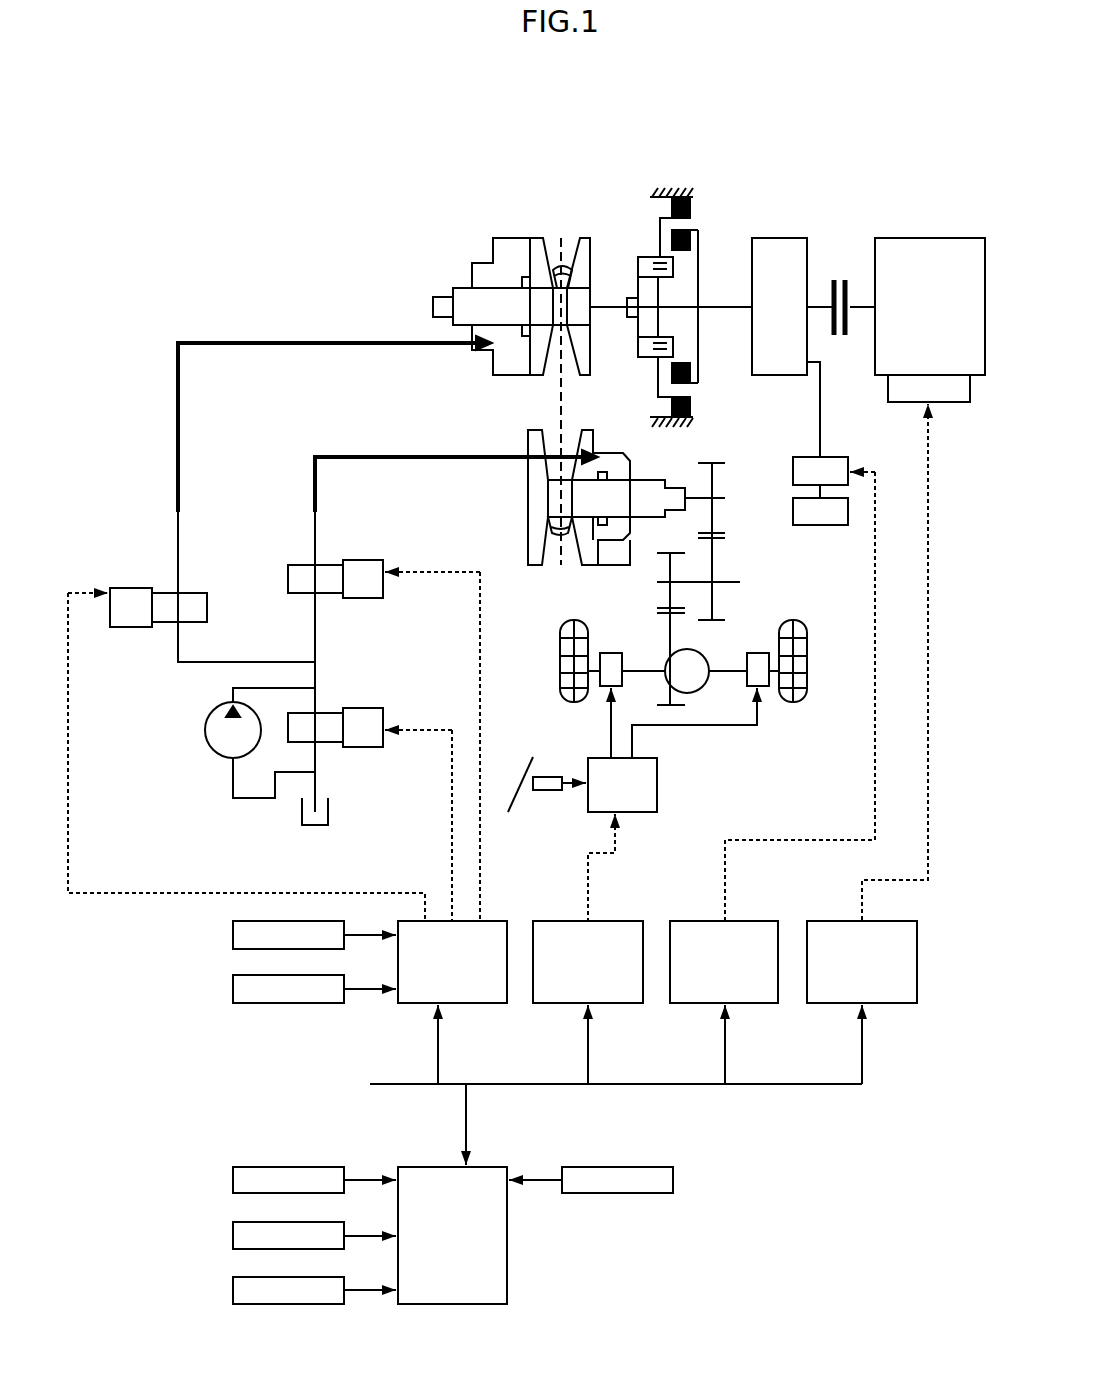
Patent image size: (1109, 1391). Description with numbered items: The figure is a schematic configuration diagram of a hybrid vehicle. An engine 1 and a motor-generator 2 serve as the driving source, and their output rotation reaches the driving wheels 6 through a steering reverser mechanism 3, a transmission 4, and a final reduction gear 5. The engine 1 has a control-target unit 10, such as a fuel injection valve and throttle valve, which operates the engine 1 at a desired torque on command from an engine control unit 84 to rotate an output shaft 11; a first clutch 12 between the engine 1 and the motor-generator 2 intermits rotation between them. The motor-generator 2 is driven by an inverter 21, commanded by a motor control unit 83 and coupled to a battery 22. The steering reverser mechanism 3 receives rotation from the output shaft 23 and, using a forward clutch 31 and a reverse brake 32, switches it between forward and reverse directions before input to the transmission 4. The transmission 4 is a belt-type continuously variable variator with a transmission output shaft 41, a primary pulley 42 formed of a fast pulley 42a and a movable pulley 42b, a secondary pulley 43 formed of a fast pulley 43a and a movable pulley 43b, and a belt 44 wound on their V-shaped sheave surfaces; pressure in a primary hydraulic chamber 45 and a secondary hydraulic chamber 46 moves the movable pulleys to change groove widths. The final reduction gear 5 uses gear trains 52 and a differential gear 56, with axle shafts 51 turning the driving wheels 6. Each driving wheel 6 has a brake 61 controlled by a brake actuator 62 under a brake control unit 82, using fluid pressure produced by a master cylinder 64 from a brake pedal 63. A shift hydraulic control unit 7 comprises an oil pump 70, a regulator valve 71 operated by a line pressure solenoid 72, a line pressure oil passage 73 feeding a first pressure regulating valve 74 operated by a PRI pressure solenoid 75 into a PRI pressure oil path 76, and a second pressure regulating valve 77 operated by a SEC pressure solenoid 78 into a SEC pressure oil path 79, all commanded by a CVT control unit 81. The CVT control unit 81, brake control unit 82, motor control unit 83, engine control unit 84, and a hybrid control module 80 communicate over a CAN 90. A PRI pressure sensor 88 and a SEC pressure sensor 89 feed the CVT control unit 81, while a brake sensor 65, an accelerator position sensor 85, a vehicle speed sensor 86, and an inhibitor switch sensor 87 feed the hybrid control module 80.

The engine 1 is at (940, 238).
The control-target unit 10 is at (955, 403).
The output shaft 11 is at (855, 300).
The first clutch 12 is at (836, 280).
The motor-generator 2 is at (790, 238).
The inverter 21 is at (805, 457).
The battery 22 is at (793, 512).
The output shaft 23 is at (717, 303).
The steering reverser mechanism 3 is at (679, 181).
The forward clutch 31 is at (692, 230).
The reverse brake 32 is at (668, 190).
The transmission 4 is at (564, 183).
The transmission output shaft 41 is at (693, 497).
The primary pulley 42 is at (475, 268).
The fast pulley 42a is at (582, 237).
The movable pulley 42b is at (535, 238).
The secondary pulley 43 is at (528, 543).
The fast pulley 43a is at (528, 443).
The movable pulley 43b is at (585, 430).
The belt 44 is at (553, 535).
The primary hydraulic chamber 45 is at (515, 253).
The secondary hydraulic chamber 46 is at (607, 543).
The final reduction gear 5 is at (745, 550).
The axle shafts 51 is at (632, 673).
The gear trains 52 is at (713, 598).
The differential gear 56 is at (693, 650).
The driving wheels 6 is at (560, 678).
The brake 61 is at (603, 688).
The brake actuator 62 is at (658, 782).
The brake pedal 63 is at (513, 813).
The master cylinder 64 is at (547, 790).
The brake sensor 65 is at (674, 1180).
The shift hydraulic control unit 7 is at (147, 792).
The oil pump 70 is at (210, 743).
The regulator valve 71 is at (323, 708).
The line pressure solenoid 72 is at (372, 747).
The line pressure oil passage 73 is at (207, 663).
The first pressure regulating valve 74 is at (168, 592).
The PRI pressure solenoid 75 is at (120, 628).
The PRI pressure oil path 76 is at (178, 530).
The second pressure regulating valve 77 is at (323, 560).
The SEC pressure solenoid 78 is at (372, 600).
The SEC pressure oil path 79 is at (315, 537).
The hybrid control module 80 is at (507, 1261).
The CVT control unit 81 is at (480, 1003).
The brake control unit 82 is at (616, 1003).
The motor control unit 83 is at (751, 1003).
The engine control unit 84 is at (890, 1003).
The accelerator position sensor 85 is at (233, 1182).
The vehicle speed sensor 86 is at (233, 1238).
The inhibitor switch sensor 87 is at (233, 1292).
The PRI pressure sensor 88 is at (233, 937).
The SEC pressure sensor 89 is at (233, 991).
The CAN 90 is at (770, 1087).